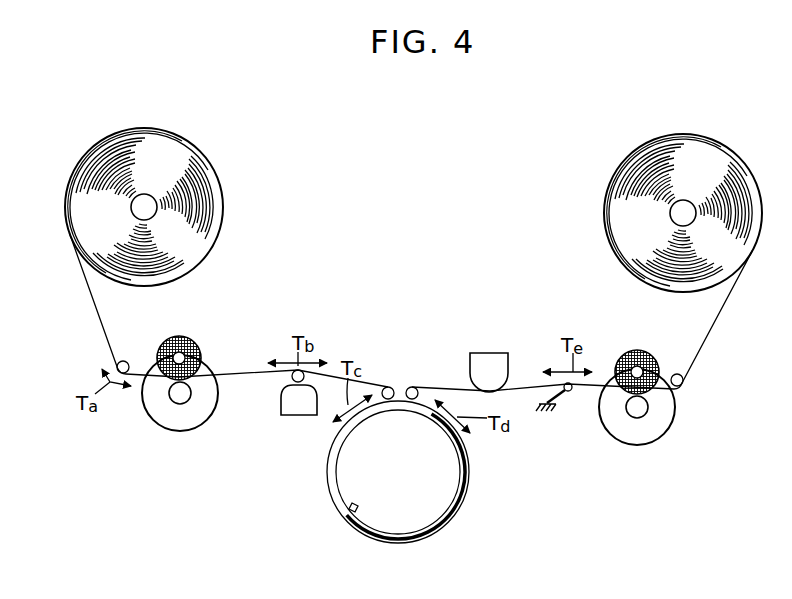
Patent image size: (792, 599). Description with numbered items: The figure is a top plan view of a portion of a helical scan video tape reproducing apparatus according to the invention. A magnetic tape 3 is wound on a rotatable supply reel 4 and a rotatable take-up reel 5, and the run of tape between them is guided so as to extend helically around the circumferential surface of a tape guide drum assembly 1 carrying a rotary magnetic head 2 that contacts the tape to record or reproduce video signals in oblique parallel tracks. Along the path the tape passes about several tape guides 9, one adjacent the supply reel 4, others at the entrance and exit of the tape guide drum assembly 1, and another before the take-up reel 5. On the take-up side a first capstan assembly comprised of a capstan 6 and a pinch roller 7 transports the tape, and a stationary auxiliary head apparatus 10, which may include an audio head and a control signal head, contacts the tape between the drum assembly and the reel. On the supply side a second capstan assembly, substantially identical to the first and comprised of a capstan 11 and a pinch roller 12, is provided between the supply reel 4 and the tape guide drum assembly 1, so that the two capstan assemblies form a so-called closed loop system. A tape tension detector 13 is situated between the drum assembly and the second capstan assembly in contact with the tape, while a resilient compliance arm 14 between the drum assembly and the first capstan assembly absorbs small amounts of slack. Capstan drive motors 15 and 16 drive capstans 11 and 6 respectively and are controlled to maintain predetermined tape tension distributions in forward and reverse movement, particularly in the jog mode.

The tape guide drum assembly 1 is at (395, 517).
The rotary magnetic head 2 is at (347, 518).
The magnetic tape 3 is at (242, 373).
The supply reel 4 is at (172, 163).
The take-up reel 5 is at (700, 162).
The capstan 6 is at (637, 409).
The pinch roller 7 is at (642, 351).
The tape guide 9 is at (127, 361).
The stationary auxiliary head apparatus 10 is at (491, 353).
The capstan 11 is at (185, 396).
The pinch roller 12 is at (182, 336).
The tape tension detector 13 is at (298, 415).
The resilient compliance arm 14 is at (568, 393).
The capstan drive motor 15 is at (158, 412).
The capstan drive motor 16 is at (658, 423).